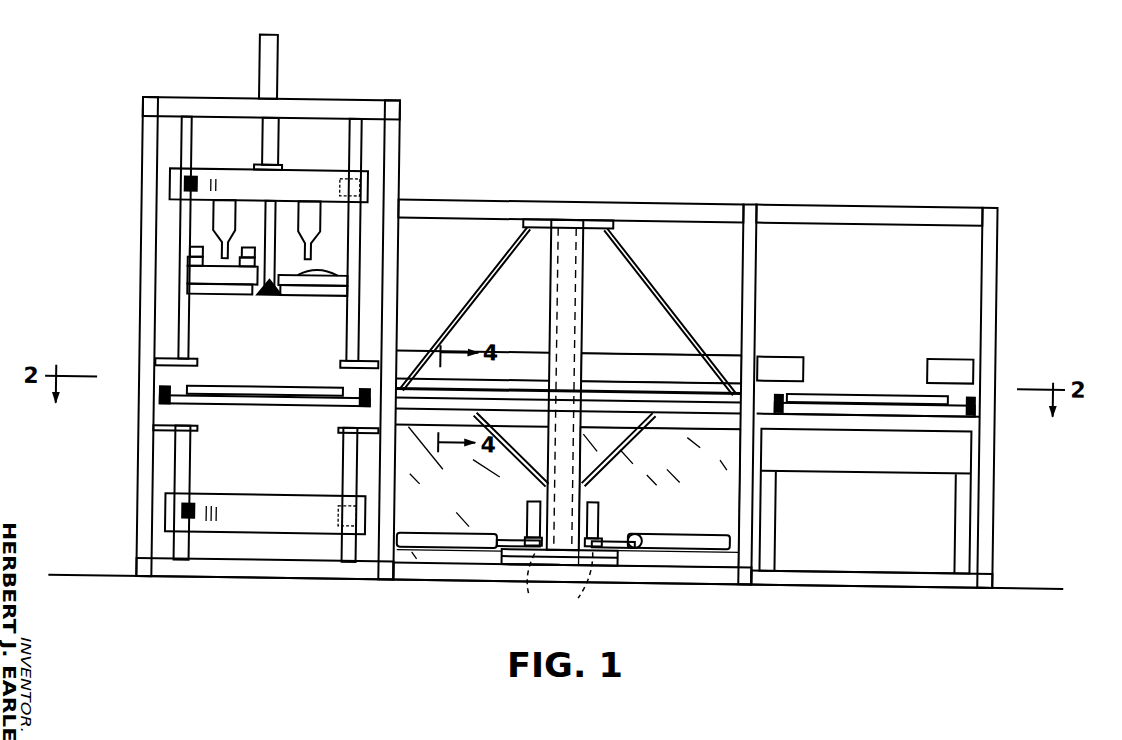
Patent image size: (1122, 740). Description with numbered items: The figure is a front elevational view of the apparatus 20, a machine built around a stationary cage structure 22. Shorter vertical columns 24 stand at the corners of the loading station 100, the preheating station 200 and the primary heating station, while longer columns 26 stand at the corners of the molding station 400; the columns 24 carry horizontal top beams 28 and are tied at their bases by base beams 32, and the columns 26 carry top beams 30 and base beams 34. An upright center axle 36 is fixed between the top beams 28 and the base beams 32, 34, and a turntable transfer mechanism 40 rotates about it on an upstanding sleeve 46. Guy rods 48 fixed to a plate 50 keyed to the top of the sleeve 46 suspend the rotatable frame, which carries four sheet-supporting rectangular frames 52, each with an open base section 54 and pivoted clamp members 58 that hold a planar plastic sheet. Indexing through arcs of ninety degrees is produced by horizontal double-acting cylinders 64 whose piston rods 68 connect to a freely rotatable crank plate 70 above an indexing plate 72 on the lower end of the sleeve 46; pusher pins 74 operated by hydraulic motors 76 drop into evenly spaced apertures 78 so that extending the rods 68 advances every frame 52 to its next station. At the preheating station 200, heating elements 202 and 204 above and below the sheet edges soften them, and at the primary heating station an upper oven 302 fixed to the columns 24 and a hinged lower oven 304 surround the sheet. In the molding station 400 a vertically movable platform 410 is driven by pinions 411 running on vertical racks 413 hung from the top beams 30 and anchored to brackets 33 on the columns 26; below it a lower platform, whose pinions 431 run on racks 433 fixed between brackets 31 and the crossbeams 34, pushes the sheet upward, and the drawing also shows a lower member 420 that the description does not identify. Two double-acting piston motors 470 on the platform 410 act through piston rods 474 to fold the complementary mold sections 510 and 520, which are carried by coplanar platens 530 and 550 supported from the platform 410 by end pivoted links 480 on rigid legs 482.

The apparatus 20 is at (569, 357).
The cage structure 22 is at (711, 344).
The vertical columns 24 is at (401, 265).
The vertical columns 26 is at (150, 214).
The horizontal top beams 28 is at (503, 196).
The horizontal top beams 30 is at (357, 97).
The brackets 31 is at (195, 430).
The base beams 32 is at (874, 575).
The brackets 33 is at (198, 358).
The base beams 34 is at (222, 578).
The center axle 36 is at (572, 268).
The transfer mechanism 40 is at (518, 372).
The sleeve 46 is at (587, 306).
The guy rods 48 is at (493, 268).
The plate 50 is at (617, 221).
The sheet-supporting frames 52 is at (280, 384).
The base section 54 is at (235, 404).
The clamp members 58 is at (142, 393).
The cylinders 64 is at (455, 528).
The piston rods 68 is at (503, 534).
The crank plate 70 is at (602, 560).
The indexing plate 72 is at (536, 560).
The pusher pins 74 is at (536, 532).
The hydraulic motors 76 is at (539, 496).
The apertures 78 is at (583, 590).
The loading station 100 is at (608, 371).
The preheating station 200 is at (873, 436).
The heating elements 202 is at (781, 348).
The heating elements 204 is at (863, 462).
The oven 302 is at (670, 345).
The oven 304 is at (684, 461).
The molding station 400 is at (400, 323).
The platform 410 is at (302, 164).
The pinions 411 is at (200, 176).
The vertical racks 413 is at (182, 146).
The lower cross block 420 is at (256, 492).
The pinions 431 is at (200, 518).
The vertical racks 433 is at (180, 478).
The double-acting piston motors 470 is at (265, 50).
The piston rods 474 is at (279, 212).
The end pivoted links 480 is at (249, 297).
The rigid legs 482 is at (215, 222).
The mold section 510 is at (220, 296).
The mold section 520 is at (321, 297).
The platen 530 is at (188, 272).
The platen 550 is at (350, 283).